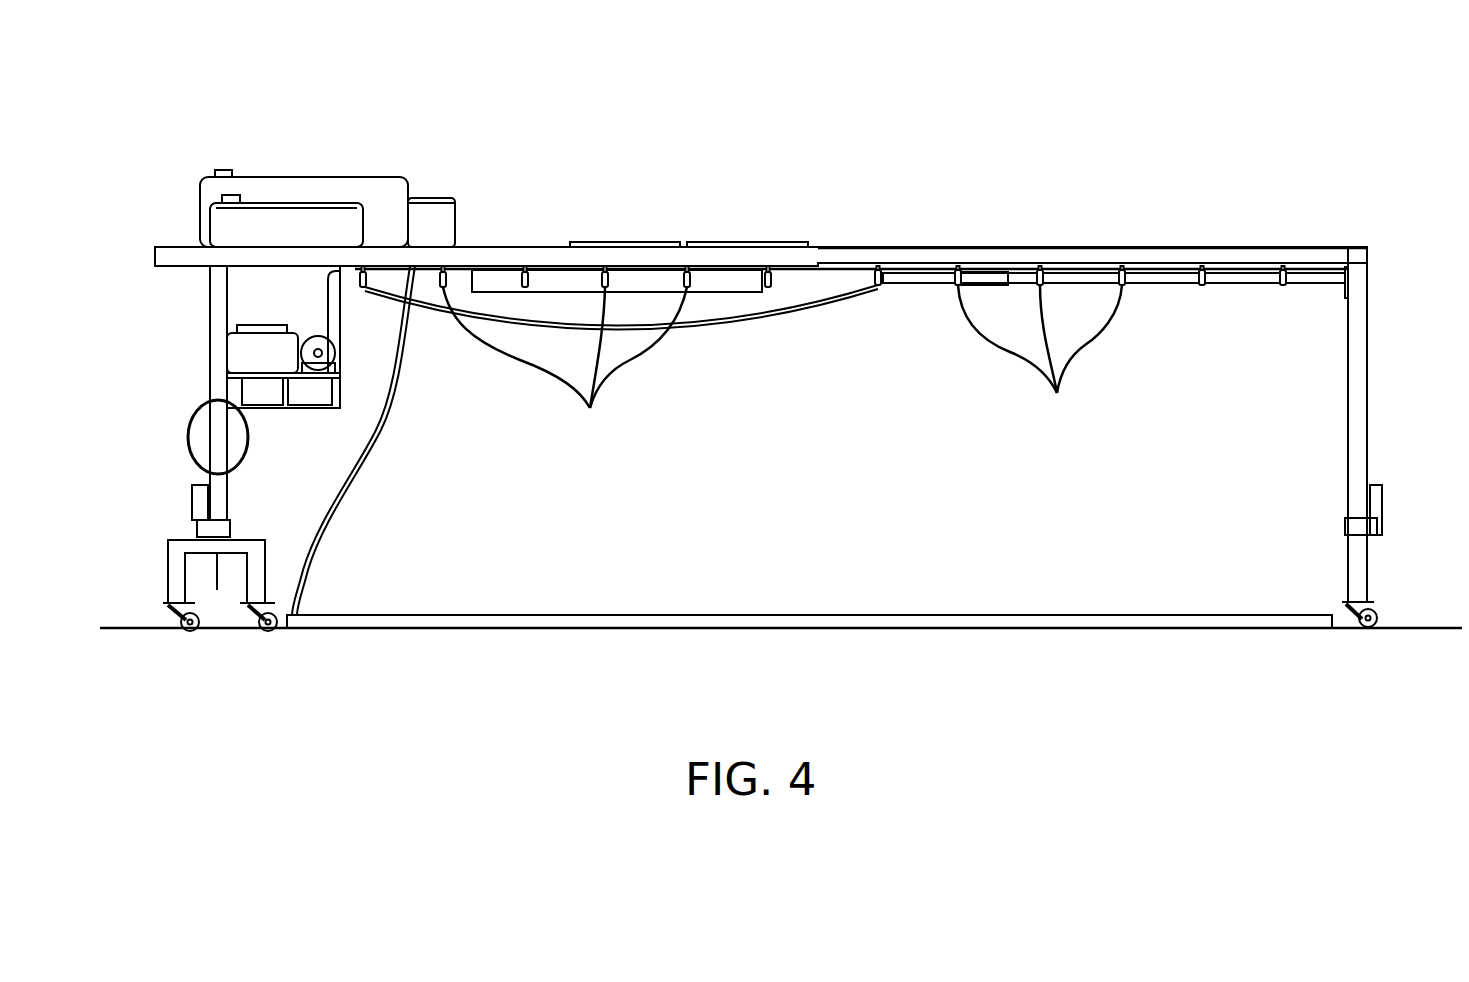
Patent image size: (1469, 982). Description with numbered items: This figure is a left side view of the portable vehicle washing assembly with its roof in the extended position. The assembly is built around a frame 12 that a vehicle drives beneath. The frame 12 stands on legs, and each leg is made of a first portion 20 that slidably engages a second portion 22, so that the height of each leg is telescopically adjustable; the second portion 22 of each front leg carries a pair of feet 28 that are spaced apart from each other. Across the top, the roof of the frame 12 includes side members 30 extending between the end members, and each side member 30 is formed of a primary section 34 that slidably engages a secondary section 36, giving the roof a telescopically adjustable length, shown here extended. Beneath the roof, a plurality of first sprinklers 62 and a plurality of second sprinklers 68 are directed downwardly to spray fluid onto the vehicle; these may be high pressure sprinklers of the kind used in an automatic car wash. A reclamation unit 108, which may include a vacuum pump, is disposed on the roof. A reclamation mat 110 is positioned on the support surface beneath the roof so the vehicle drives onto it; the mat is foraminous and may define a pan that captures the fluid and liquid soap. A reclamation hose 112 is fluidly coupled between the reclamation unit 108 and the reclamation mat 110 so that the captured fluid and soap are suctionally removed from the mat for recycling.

The frame 12 is at (1378, 245).
The first portion 20 is at (1378, 326).
The second portion 22 is at (1378, 578).
The feet 28 is at (172, 573).
The side members 30 is at (898, 248).
The primary section 34 is at (790, 246).
The secondary section 36 is at (1049, 247).
The first sprinklers 62 is at (565, 369).
The second sprinklers 68 is at (1040, 361).
The reclamation unit 108 is at (452, 199).
The reclamation mat 110 is at (723, 617).
The reclamation hose 112 is at (342, 490).